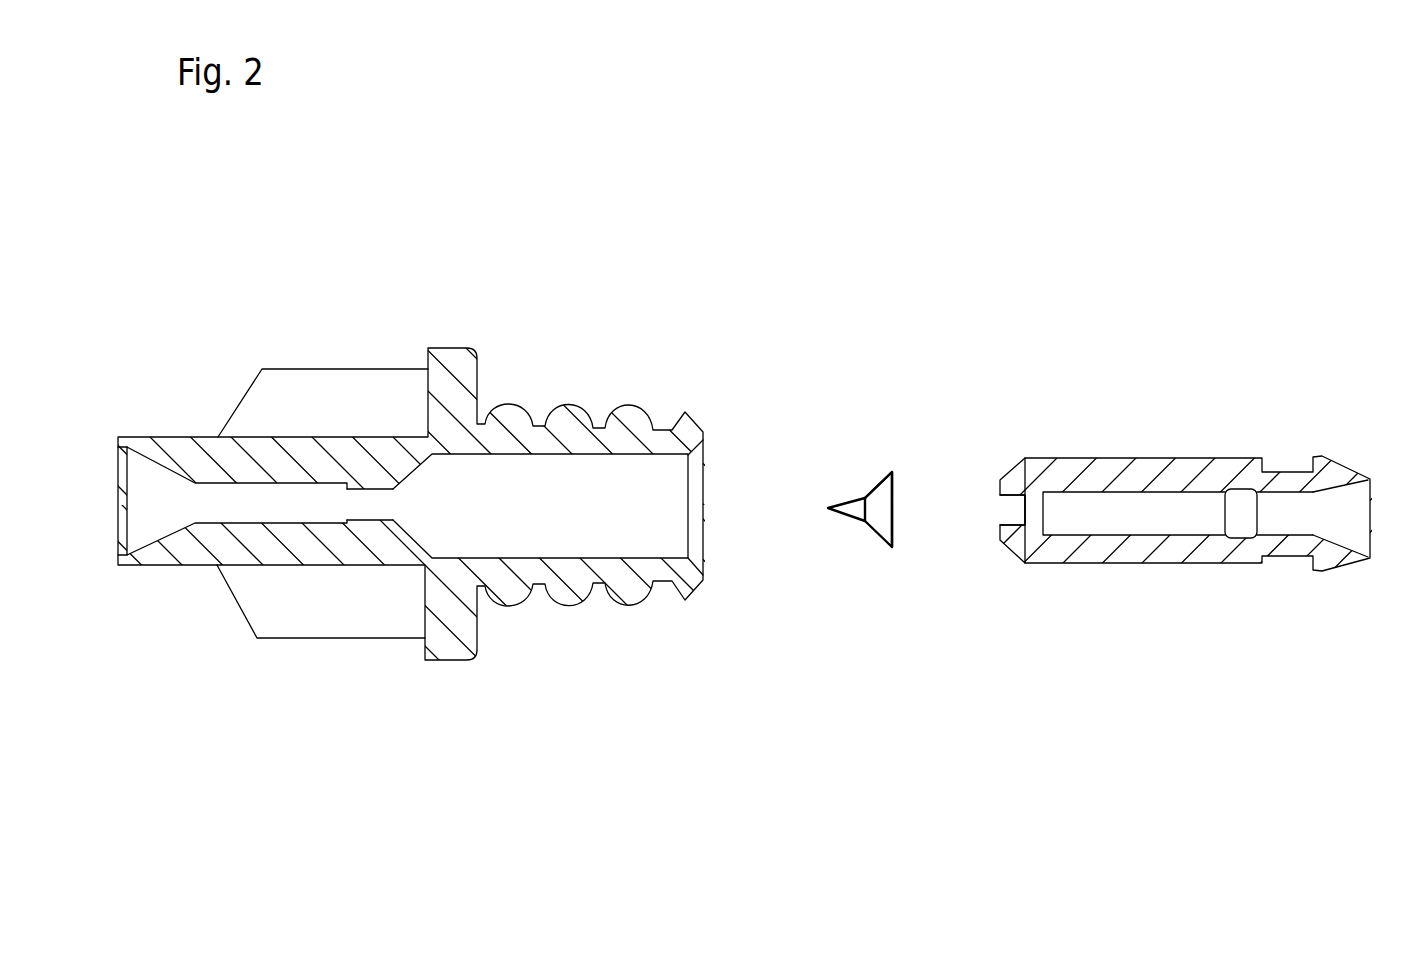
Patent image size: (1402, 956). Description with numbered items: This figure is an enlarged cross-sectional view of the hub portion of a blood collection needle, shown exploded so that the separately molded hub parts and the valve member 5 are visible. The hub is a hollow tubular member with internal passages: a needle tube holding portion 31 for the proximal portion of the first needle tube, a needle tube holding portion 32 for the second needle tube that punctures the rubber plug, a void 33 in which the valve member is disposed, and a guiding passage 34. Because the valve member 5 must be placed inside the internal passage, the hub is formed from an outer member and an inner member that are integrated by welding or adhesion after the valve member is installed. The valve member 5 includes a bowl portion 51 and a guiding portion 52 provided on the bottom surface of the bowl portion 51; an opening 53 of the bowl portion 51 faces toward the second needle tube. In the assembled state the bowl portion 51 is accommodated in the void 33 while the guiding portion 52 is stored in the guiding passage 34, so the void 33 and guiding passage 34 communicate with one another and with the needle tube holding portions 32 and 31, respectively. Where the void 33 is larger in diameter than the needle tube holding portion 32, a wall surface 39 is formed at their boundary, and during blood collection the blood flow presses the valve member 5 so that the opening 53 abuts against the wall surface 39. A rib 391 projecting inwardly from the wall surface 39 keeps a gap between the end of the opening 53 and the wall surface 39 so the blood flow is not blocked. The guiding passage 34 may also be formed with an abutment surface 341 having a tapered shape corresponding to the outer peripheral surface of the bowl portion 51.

The valve member 5 is at (876, 470).
The needle tube holding portion 31 is at (220, 625).
The needle tube holding portion 32 is at (1085, 533).
The void 33 is at (490, 560).
The guiding passage 34 is at (333, 651).
The abutment surface 341 is at (501, 396).
The wall surface 39 is at (1169, 627).
The rib 391 is at (999, 626).
The bowl portion 51 is at (896, 613).
The guiding portion 52 is at (804, 617).
The opening 53 is at (863, 467).